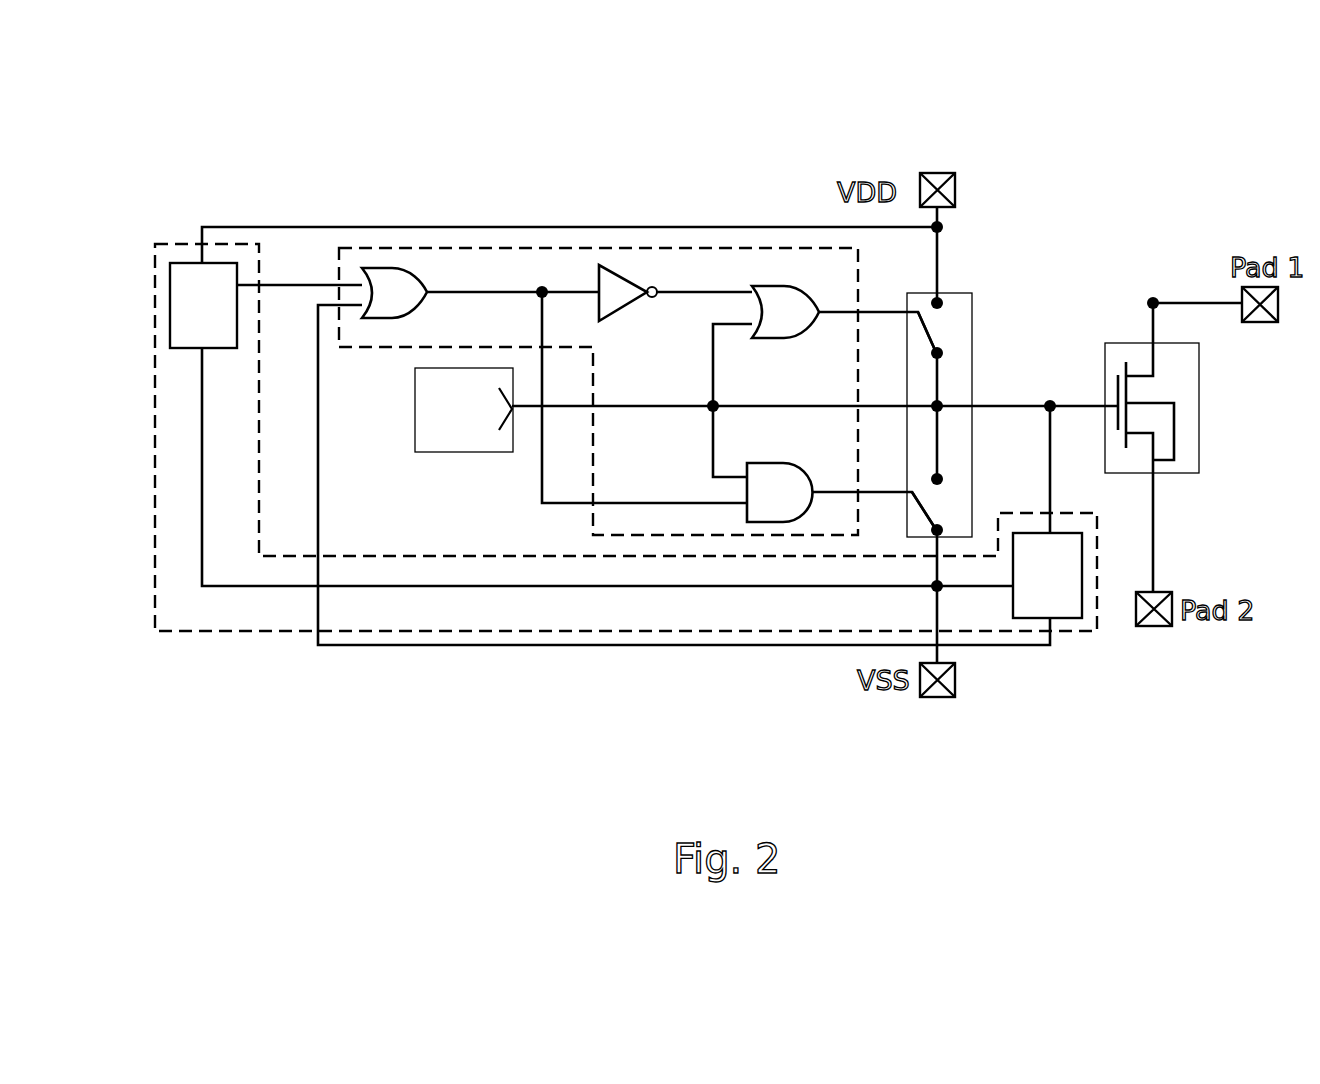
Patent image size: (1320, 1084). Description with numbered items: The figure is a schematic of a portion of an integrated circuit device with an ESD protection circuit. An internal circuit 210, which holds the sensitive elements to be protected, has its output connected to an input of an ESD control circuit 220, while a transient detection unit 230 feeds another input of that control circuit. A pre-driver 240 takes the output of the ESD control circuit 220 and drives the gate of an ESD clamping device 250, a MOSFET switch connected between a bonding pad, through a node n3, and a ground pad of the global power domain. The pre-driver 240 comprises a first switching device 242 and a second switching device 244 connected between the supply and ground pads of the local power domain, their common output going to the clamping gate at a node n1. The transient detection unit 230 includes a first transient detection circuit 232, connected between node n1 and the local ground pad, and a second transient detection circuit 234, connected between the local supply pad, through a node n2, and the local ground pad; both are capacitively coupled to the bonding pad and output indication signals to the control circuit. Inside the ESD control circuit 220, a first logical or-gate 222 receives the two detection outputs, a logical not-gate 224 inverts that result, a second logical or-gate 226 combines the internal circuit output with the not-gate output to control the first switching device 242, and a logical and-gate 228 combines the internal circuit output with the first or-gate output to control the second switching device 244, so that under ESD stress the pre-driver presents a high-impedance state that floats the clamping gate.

The internal circuit 210 is at (464, 410).
The ESD control circuit 220 is at (541, 248).
The first logical or-gate 222 is at (416, 289).
The logical not-gate 224 is at (640, 289).
The second logical or-gate 226 is at (797, 299).
The logical and-gate 228 is at (796, 480).
The transient detection unit 230 is at (290, 632).
The first transient detection circuit 232 is at (1047, 575).
The second transient detection circuit 234 is at (203, 305).
The pre-driver 240 is at (973, 318).
The first switching device 242 is at (954, 333).
The second switching device 244 is at (951, 510).
The ESD clamping device 250 is at (1105, 343).
The node n1 is at (1050, 404).
The node n2 is at (943, 224).
The node n3 is at (1157, 300).